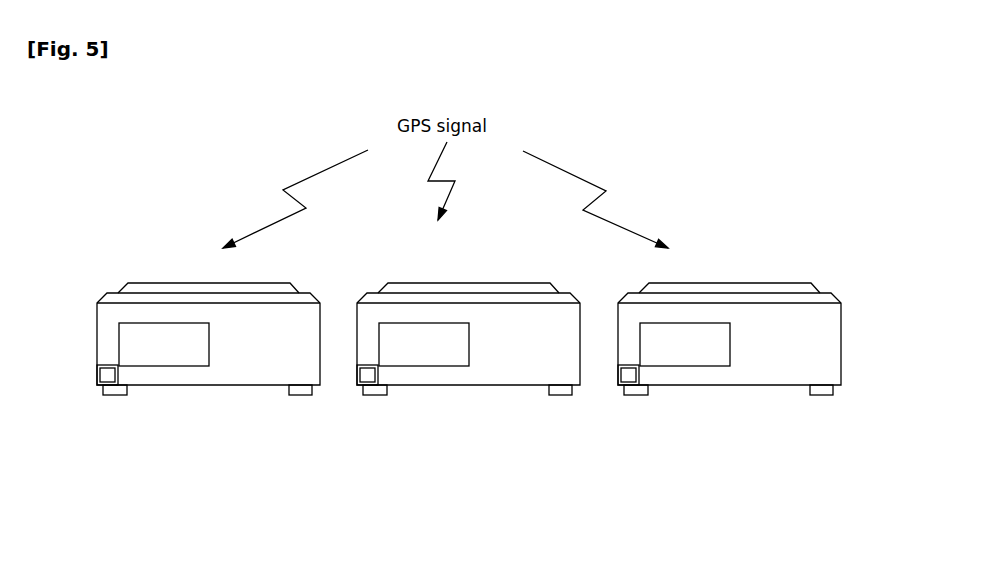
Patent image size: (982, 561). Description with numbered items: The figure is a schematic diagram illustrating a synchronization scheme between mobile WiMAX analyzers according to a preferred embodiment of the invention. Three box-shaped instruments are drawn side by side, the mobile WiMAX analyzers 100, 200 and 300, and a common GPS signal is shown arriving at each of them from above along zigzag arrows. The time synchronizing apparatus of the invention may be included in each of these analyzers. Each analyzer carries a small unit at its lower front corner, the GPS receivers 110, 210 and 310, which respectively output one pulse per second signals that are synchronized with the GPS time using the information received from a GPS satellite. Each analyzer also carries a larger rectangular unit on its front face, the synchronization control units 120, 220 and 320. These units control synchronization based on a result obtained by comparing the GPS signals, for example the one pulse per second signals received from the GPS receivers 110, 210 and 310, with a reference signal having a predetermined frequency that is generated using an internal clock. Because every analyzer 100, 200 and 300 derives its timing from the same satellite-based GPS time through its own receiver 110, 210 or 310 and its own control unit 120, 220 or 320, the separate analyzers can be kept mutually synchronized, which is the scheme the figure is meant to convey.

The mobile WiMAX analyzer 100 is at (95, 328).
The GPS receiver 110 is at (95, 372).
The synchronization control unit 120 is at (135, 323).
The mobile WiMAX analyzer 200 is at (355, 328).
The GPS receiver 210 is at (357, 385).
The synchronization control unit 220 is at (395, 323).
The mobile WiMAX analyzer 300 is at (845, 328).
The GPS receiver 310 is at (620, 385).
The synchronization control unit 320 is at (718, 323).